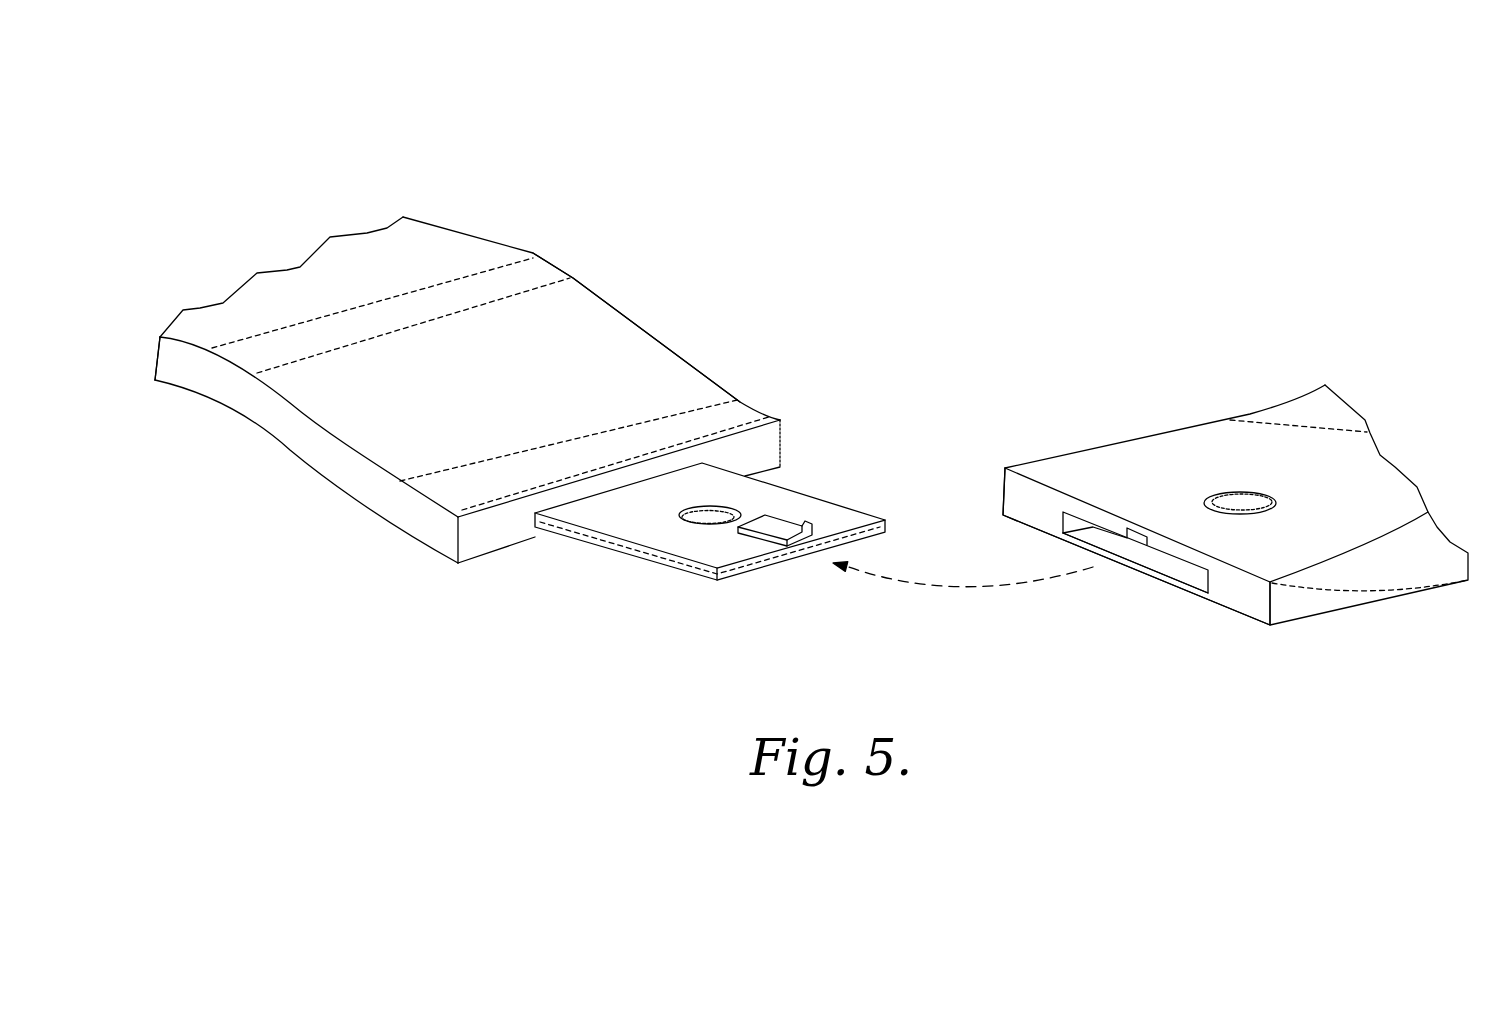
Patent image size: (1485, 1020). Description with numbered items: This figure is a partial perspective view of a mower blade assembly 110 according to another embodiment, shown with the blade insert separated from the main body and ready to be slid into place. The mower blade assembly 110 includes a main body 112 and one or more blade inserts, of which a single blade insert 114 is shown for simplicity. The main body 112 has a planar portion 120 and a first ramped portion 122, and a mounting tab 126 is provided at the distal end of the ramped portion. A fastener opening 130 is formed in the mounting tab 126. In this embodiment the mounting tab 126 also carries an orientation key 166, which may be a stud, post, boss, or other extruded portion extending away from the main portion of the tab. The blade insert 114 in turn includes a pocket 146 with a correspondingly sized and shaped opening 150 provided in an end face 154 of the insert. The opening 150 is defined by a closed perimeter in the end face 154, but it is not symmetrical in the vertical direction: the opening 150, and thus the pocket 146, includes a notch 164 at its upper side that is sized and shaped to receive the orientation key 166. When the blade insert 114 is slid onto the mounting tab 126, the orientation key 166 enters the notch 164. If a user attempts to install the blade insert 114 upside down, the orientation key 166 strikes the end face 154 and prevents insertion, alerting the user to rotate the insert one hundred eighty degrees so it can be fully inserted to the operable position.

The mower blade assembly 110 is at (363, 157).
The main body 112 is at (207, 337).
The blade insert 114 is at (1382, 477).
The planar portion 120 is at (457, 257).
The first ramped portion 122 is at (613, 340).
The mounting tab 126 is at (620, 520).
The fastener opening 130 is at (725, 508).
The pocket 146 is at (1187, 573).
The opening 150 is at (1160, 573).
The end face 154 is at (1053, 503).
The notch 164 is at (1137, 533).
The orientation key 166 is at (803, 522).